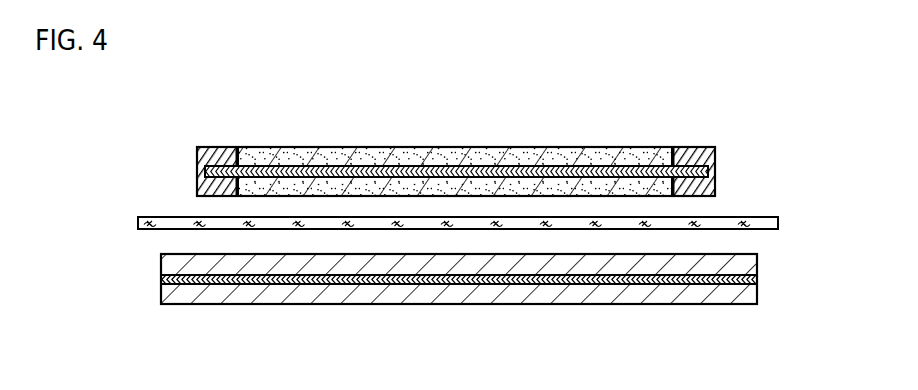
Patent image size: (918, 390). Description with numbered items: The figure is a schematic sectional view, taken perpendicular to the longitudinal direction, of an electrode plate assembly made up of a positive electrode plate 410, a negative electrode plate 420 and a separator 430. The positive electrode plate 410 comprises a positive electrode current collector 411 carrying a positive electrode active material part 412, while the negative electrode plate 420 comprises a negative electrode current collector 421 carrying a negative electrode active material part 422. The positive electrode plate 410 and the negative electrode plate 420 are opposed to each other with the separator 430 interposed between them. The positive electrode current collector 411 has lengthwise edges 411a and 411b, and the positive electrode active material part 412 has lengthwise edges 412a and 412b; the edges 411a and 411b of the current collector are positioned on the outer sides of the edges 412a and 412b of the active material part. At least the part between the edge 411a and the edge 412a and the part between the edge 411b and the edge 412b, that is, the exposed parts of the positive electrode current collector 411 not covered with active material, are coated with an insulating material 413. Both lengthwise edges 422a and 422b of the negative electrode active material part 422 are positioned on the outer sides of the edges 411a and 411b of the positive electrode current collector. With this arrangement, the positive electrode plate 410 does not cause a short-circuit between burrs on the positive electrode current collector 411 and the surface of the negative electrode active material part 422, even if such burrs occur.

The positive electrode plate 410 is at (455, 139).
The positive electrode current collector 411 is at (451, 165).
The edge of the positive electrode current collector 411a is at (198, 169).
The edge of the positive electrode current collector 411b is at (714, 171).
The positive electrode active material part 412 is at (392, 187).
The edge of the positive electrode active material part 412a is at (198, 151).
The edge of the positive electrode active material part 412b is at (713, 161).
The insulating material 413 is at (222, 148).
The negative electrode plate 420 is at (459, 314).
The negative electrode current collector 421 is at (383, 285).
The negative electrode active material part 422 is at (323, 266).
The lengthwise edge of the negative electrode active material part 422a is at (161, 257).
The lengthwise edge of the negative electrode active material part 422b is at (758, 265).
The separator 430 is at (762, 231).